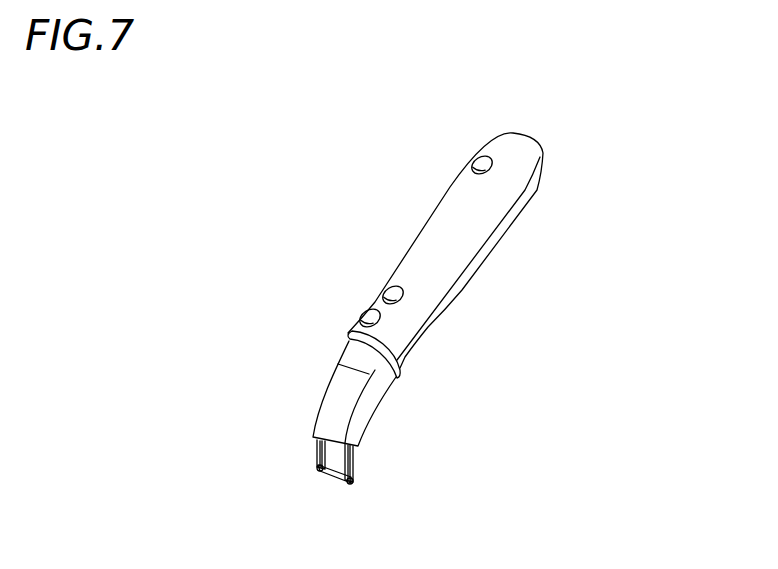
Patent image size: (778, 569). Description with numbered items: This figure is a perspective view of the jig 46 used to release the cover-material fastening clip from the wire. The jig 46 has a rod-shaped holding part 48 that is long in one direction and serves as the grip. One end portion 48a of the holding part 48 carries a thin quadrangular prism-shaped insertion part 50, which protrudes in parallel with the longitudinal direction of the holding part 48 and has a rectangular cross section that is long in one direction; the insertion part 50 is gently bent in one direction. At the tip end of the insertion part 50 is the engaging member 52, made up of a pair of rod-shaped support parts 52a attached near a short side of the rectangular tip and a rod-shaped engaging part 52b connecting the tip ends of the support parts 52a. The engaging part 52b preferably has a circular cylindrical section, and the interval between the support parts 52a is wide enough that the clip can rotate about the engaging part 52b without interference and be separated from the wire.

The jig 46 is at (553, 148).
The holding part 48 is at (455, 217).
The one end portion of the holding part 48a is at (348, 330).
The insertion part 50 is at (332, 397).
The engaging member 52 is at (317, 452).
The support parts 52a is at (354, 461).
The engaging part 52b is at (331, 473).